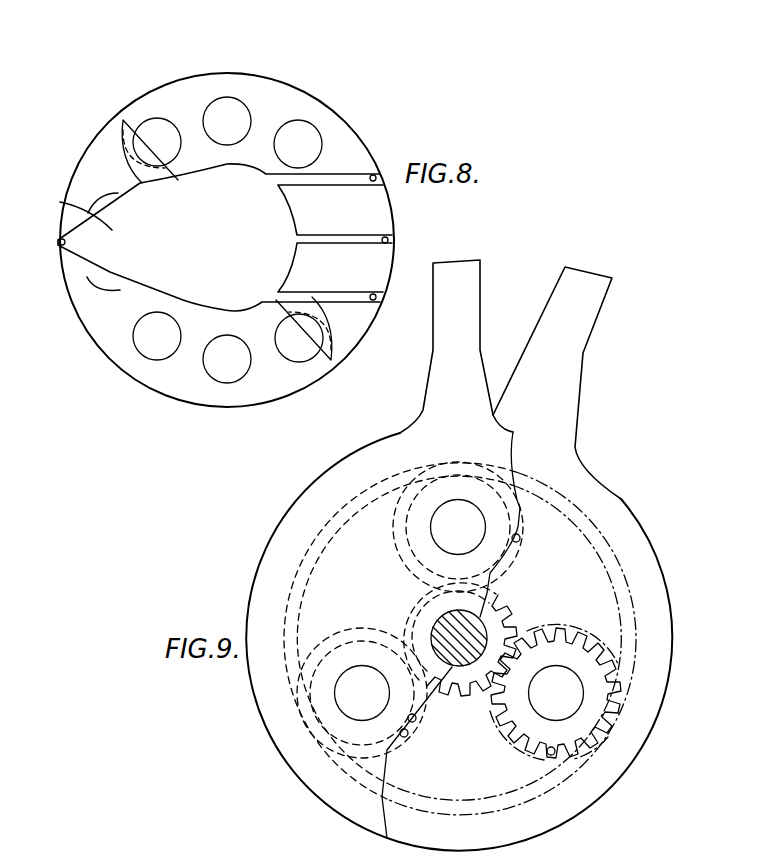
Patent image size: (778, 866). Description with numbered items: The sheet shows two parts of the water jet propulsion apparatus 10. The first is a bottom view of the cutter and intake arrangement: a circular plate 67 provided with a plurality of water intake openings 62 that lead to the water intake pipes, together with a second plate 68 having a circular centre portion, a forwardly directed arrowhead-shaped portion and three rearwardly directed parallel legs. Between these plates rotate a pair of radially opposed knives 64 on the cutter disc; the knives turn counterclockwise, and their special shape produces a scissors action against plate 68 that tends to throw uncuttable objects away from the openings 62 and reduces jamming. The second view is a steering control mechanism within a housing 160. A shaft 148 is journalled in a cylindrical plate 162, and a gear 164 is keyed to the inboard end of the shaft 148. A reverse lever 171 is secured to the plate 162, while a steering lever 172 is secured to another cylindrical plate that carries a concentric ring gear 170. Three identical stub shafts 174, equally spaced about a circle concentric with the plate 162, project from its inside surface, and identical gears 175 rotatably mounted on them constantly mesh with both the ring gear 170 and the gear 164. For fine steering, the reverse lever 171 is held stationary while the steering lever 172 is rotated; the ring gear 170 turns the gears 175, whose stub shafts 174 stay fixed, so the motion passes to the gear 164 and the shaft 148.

In FIG. 9, the pump assembly 10 is at (298, 558).
In FIG. 8, the water intake openings 62 is at (302, 135).
In FIG. 8, the knives 64 is at (125, 140).
In FIG. 8, the plate 67 is at (150, 105).
In FIG. 8, the plate 68 is at (60, 202).
In FIG. 9, the shaft 148 is at (442, 632).
In FIG. 9, the housing 160 is at (640, 518).
In FIG. 9, the cylindrical plate 162 is at (372, 596).
In FIG. 9, the gear 164 is at (497, 615).
In FIG. 9, the ring gear 170 is at (588, 752).
In FIG. 9, the reverse lever 171 is at (445, 296).
In FIG. 9, the steering lever 172 is at (590, 303).
In FIG. 9, the stub shafts 174 is at (474, 538).
In FIG. 9, the gears 175 is at (520, 540).